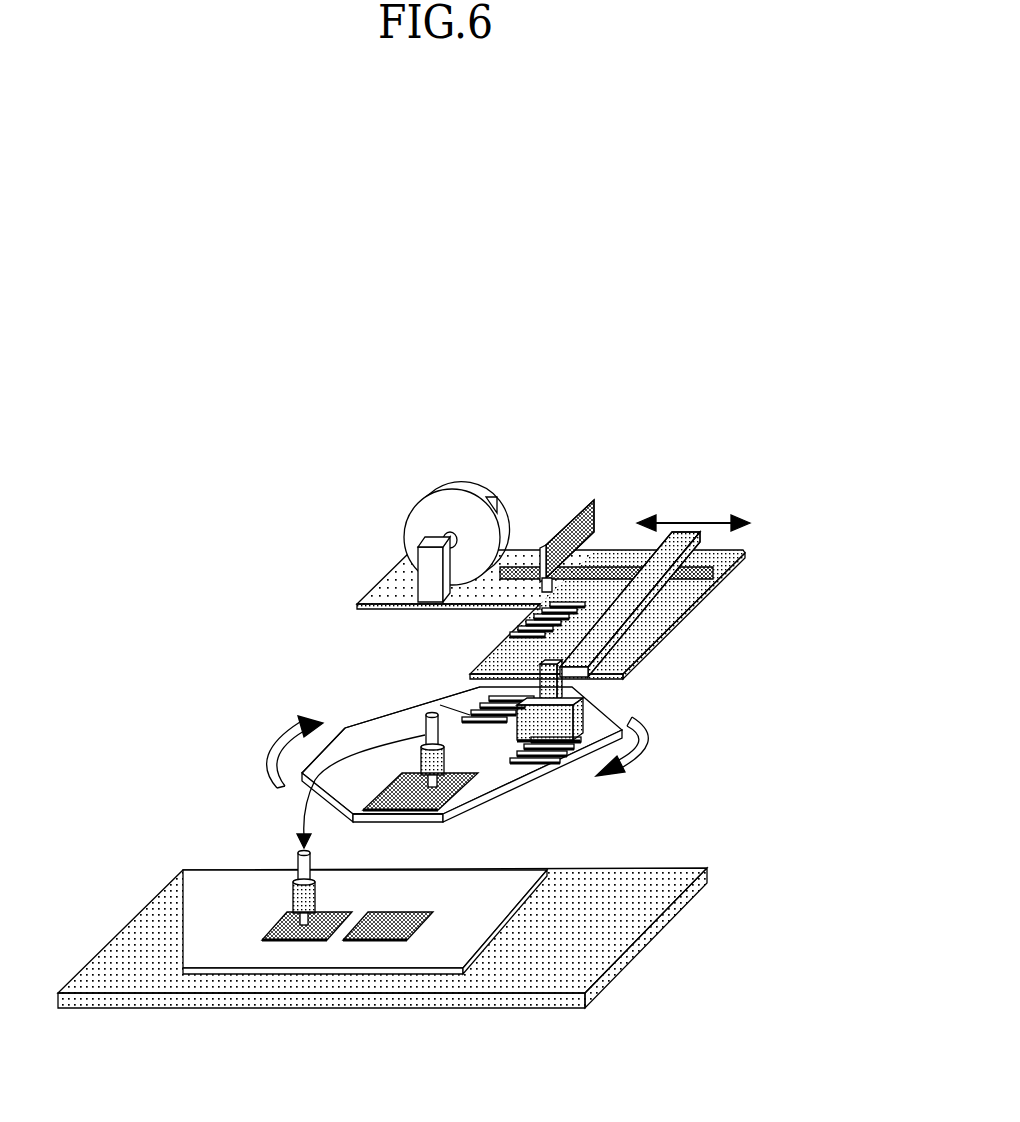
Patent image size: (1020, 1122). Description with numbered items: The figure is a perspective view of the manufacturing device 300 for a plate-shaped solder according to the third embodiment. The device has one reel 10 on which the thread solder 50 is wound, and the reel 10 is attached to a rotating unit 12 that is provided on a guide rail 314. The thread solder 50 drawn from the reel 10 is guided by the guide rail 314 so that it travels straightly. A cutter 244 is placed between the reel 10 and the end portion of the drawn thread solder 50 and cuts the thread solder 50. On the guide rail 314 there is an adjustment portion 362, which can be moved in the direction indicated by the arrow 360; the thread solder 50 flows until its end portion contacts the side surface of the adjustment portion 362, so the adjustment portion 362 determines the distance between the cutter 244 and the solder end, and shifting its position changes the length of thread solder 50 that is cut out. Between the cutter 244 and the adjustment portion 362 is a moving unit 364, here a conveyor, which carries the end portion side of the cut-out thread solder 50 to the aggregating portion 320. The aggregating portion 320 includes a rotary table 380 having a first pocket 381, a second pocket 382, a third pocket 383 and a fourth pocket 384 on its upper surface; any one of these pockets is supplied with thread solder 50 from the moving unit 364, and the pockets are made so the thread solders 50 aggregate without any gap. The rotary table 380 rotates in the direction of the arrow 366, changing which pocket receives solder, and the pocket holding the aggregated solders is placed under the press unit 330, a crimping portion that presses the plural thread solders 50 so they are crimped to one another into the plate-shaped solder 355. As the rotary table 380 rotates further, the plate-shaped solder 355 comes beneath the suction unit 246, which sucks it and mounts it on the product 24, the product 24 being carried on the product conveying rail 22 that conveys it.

The manufacturing device 300 is at (162, 364).
The reel 10 is at (437, 515).
The rotating unit 12 is at (428, 563).
The thread solder 50 is at (521, 570).
The cutter 244 is at (596, 517).
The arrow 360 is at (713, 520).
The guide rail 314 is at (717, 555).
The adjustment portion 362 is at (617, 600).
The moving unit 364 is at (495, 648).
The press unit 330 is at (583, 718).
The aggregating portion 320 is at (388, 727).
The rotary table 380 is at (518, 780).
The first pocket 381 is at (457, 712).
The second pocket 382 is at (325, 755).
The third pocket 383 is at (457, 810).
The fourth pocket 384 is at (575, 778).
The arrow 366 is at (283, 745).
The suction unit 246 is at (445, 795).
The plate-shaped solder 355 is at (383, 808).
The product conveying rail 22 is at (590, 948).
The product 24 is at (452, 937).